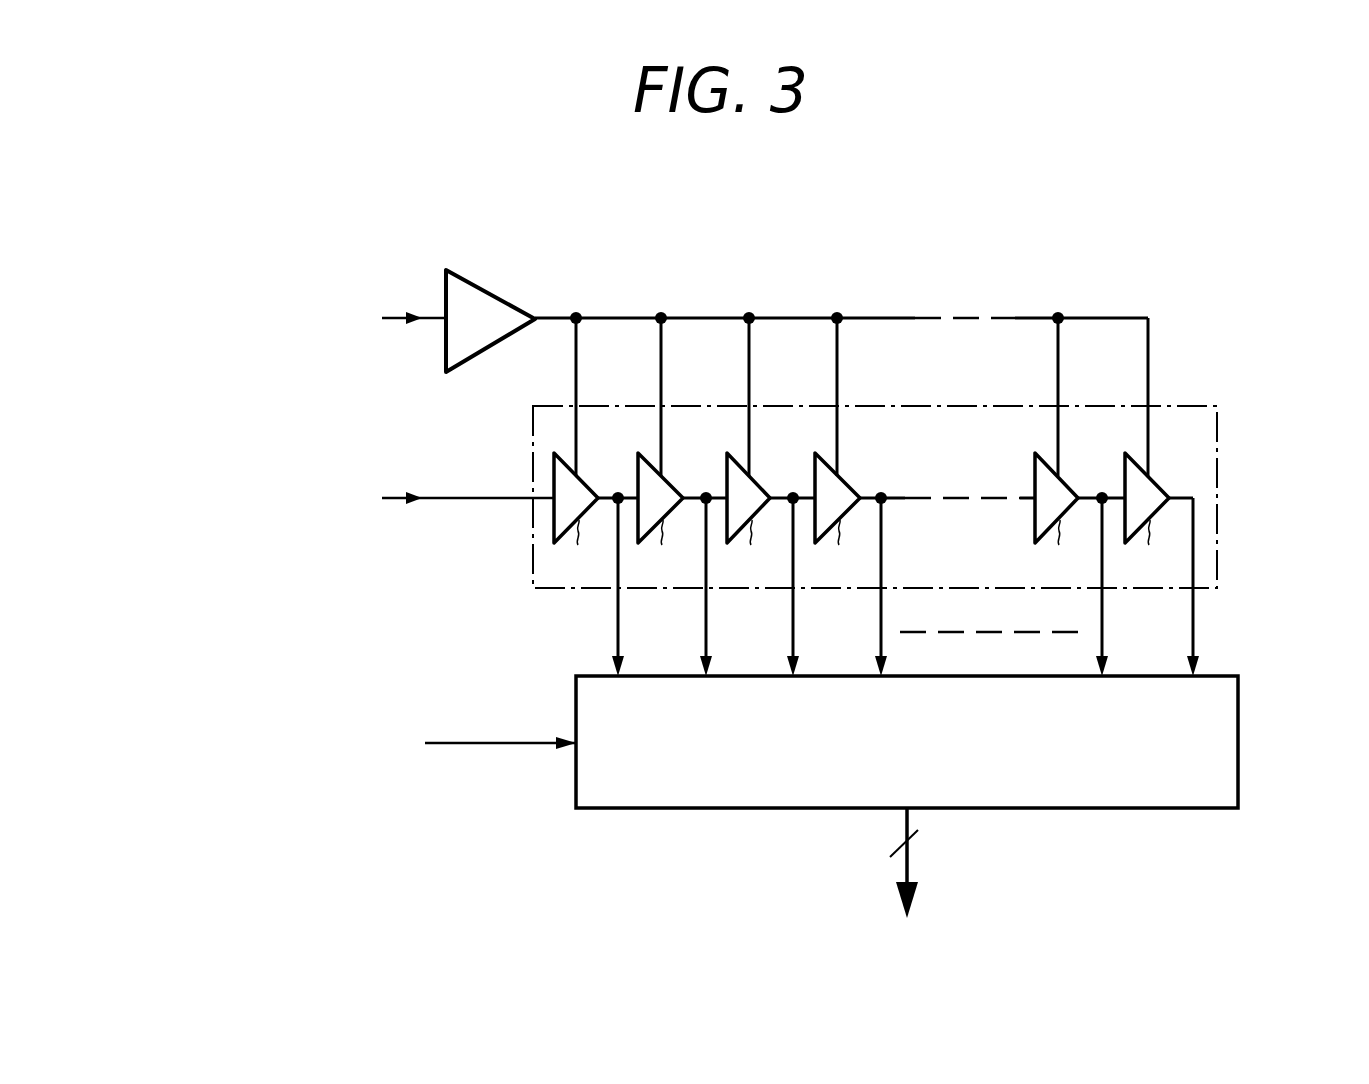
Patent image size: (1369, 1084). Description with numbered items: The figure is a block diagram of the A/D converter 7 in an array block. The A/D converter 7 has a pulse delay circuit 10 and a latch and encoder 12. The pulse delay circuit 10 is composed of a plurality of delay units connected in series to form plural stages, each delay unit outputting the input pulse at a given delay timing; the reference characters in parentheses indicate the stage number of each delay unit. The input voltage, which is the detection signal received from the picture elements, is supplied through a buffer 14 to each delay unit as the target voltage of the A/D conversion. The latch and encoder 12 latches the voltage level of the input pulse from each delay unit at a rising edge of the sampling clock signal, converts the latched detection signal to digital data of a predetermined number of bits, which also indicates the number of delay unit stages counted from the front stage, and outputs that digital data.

The A/D converter 7 is at (1152, 214).
The buffer 14 is at (496, 296).
The pulse delay circuit 10 is at (1218, 426).
The latch and encoder 12 is at (1240, 691).